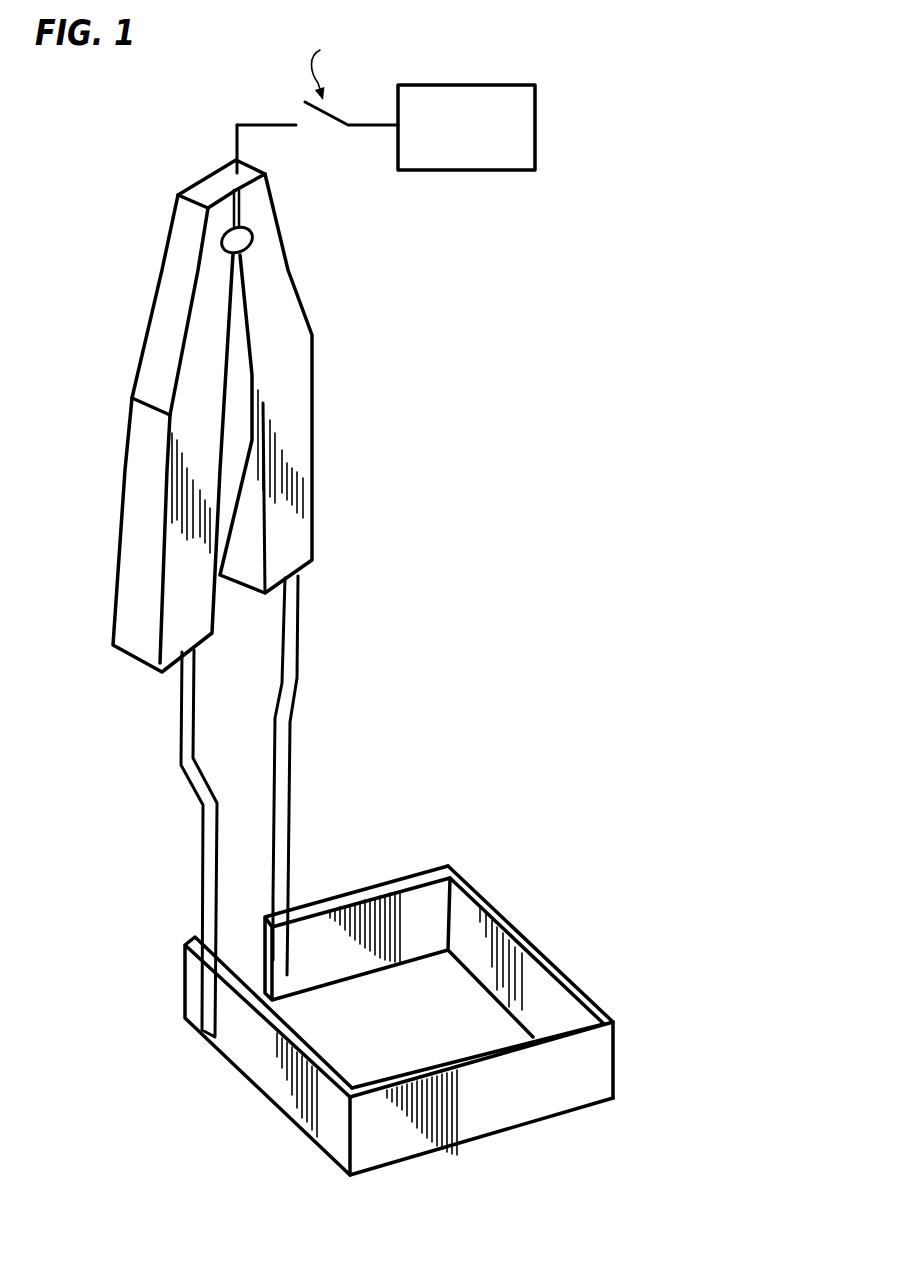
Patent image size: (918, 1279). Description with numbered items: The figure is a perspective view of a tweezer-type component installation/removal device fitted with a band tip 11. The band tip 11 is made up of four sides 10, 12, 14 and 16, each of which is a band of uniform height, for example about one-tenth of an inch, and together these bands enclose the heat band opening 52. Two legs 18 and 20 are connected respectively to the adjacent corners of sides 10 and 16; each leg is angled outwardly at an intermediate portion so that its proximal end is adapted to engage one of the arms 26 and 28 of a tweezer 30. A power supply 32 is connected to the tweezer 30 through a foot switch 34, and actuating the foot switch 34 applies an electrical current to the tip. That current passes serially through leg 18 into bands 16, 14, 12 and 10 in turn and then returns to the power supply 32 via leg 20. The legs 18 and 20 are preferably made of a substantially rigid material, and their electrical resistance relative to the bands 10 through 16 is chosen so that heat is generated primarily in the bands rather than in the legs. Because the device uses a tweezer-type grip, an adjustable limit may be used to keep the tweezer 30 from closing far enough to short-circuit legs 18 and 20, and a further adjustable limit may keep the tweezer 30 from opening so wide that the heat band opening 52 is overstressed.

The side 10 is at (323, 905).
The band tip 11 is at (434, 994).
The side 12 is at (515, 937).
The side 14 is at (513, 1098).
The side 16 is at (287, 1072).
The leg 18 is at (192, 732).
The leg 20 is at (298, 680).
The arm 26 is at (153, 448).
The arm 28 is at (285, 405).
The tweezer 30 is at (227, 398).
The power supply 32 is at (535, 113).
The foot switch 34 is at (325, 118).
The heat band opening 52 is at (424, 992).